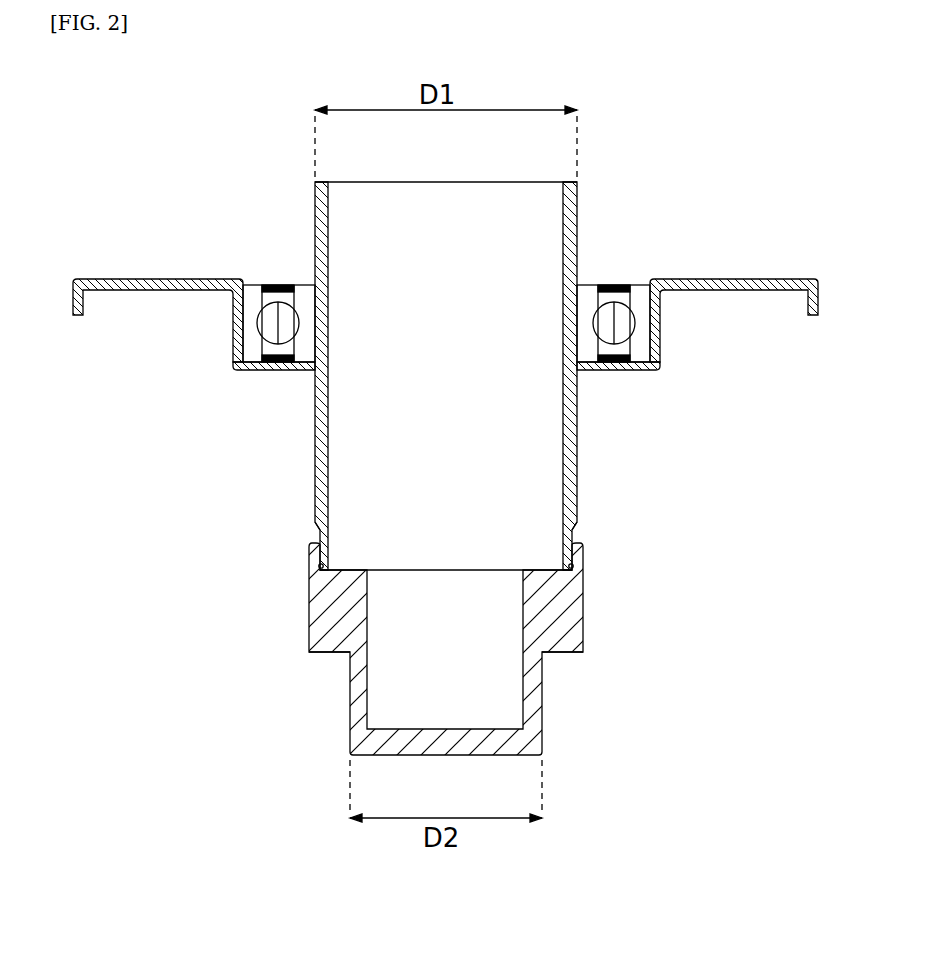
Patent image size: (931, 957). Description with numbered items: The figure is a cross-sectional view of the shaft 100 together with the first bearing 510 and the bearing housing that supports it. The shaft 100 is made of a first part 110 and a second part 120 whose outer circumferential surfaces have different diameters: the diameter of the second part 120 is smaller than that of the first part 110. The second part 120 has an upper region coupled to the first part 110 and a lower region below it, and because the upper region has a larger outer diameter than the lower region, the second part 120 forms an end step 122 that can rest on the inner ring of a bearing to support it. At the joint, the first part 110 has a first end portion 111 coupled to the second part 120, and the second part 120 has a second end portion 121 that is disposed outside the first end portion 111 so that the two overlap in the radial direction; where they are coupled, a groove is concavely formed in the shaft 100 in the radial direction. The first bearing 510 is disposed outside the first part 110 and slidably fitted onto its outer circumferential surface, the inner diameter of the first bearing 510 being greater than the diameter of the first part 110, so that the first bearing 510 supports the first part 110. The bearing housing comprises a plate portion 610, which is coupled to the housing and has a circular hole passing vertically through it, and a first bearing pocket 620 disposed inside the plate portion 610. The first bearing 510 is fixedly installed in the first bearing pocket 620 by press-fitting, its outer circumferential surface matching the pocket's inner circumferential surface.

The shaft 100 is at (492, 468).
The first part 110 is at (575, 497).
The first end portion 111 is at (317, 548).
The second part 120 is at (578, 594).
The second end portion 121 is at (320, 566).
The end step 122 is at (560, 655).
The first bearing 510 is at (636, 297).
The plate portion 610 is at (750, 278).
The first bearing pocket 620 is at (662, 366).